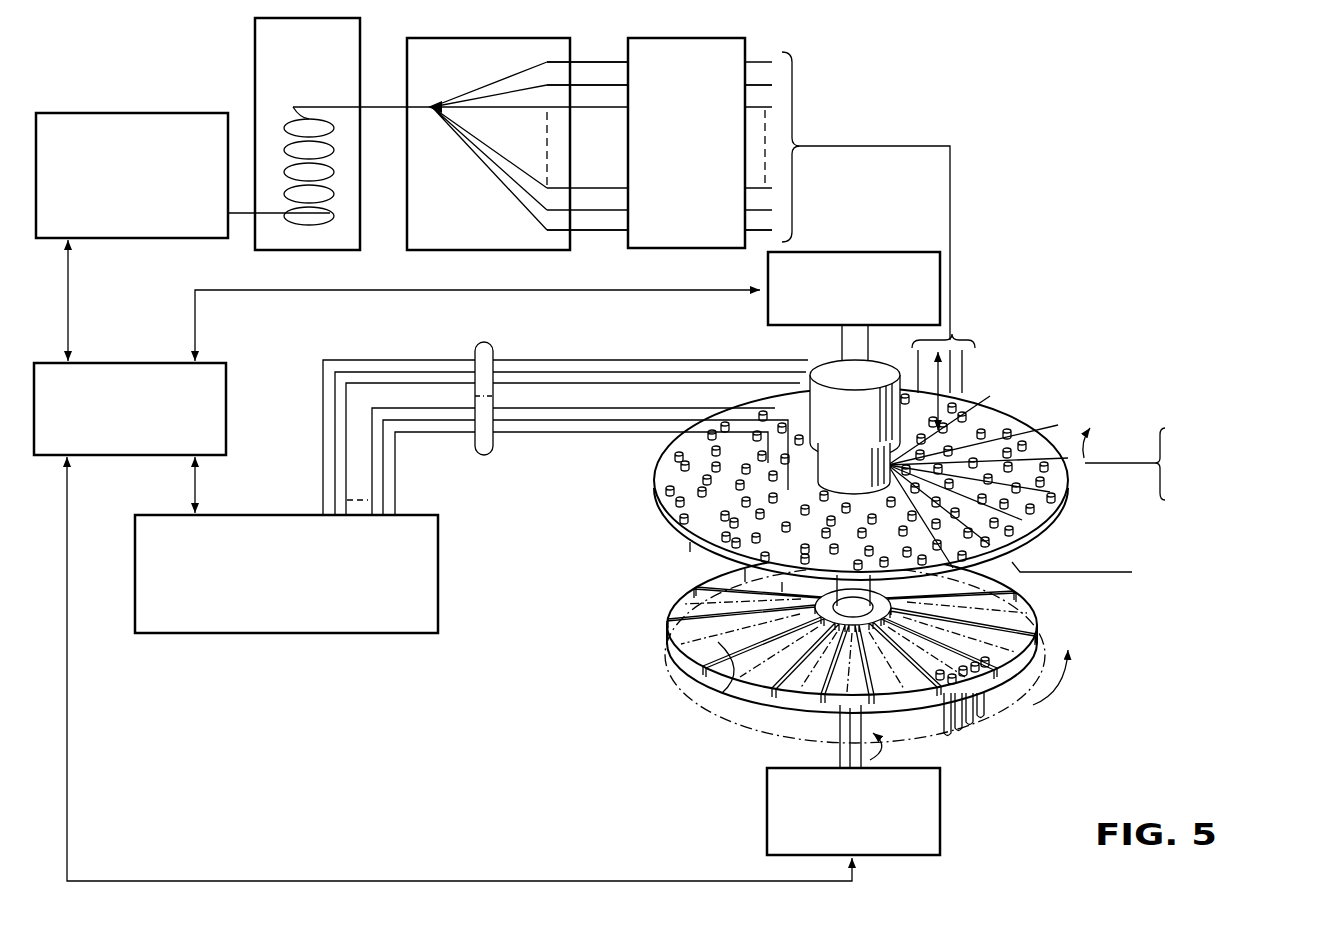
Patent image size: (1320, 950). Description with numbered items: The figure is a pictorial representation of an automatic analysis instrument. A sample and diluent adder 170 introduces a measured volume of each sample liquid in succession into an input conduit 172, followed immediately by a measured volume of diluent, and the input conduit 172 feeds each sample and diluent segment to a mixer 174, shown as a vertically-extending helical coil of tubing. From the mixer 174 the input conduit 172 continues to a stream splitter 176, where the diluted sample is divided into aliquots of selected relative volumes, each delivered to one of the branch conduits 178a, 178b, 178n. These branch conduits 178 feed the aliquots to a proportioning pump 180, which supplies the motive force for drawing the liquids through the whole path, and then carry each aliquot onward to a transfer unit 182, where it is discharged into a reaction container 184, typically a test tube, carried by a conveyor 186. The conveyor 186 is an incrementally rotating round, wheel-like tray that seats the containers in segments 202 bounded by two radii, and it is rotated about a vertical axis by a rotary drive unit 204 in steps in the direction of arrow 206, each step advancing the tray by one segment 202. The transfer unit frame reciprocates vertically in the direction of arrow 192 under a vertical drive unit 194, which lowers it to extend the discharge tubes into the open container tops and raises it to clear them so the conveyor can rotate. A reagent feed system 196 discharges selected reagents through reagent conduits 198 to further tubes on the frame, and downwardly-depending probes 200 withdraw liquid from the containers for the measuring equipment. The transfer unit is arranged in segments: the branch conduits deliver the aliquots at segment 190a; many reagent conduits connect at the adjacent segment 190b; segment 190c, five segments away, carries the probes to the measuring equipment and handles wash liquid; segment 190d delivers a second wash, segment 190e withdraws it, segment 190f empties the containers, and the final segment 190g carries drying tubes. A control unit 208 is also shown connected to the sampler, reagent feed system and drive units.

The sample and diluent adder 170 is at (72, 113).
The input conduit 172 is at (386, 108).
The mixer 174 is at (256, 42).
The stream splitter 176 is at (488, 144).
The branch conduits 178 is at (617, 56).
The branch conduit 178a is at (603, 62).
The branch conduit 178b is at (765, 85).
The branch conduit 178n is at (609, 232).
The proportioning pump 180 is at (740, 38).
The transfer unit 182 is at (975, 511).
The reaction container 184 is at (985, 714).
The conveyor 186 is at (788, 661).
The transfer unit segment 190a is at (962, 402).
The transfer unit segment 190b is at (905, 357).
The transfer unit segment 190c is at (1020, 555).
The transfer unit segment 190d is at (1033, 515).
The transfer unit segment 190e is at (1040, 489).
The transfer unit segment 190f is at (1040, 437).
The transfer unit segment 190g is at (998, 415).
The arrow 192 is at (958, 352).
The vertical drive unit 194 is at (872, 252).
The reagent feed system 196 is at (290, 633).
The reagent conduits 198 is at (493, 346).
The probes 200 is at (670, 585).
The segment 202 is at (743, 692).
The rotary drive unit 204 is at (940, 792).
The arrow 206 is at (1040, 706).
The control unit 208 is at (226, 398).